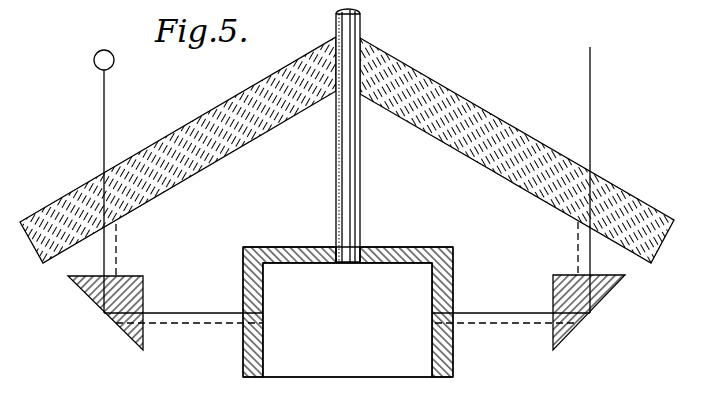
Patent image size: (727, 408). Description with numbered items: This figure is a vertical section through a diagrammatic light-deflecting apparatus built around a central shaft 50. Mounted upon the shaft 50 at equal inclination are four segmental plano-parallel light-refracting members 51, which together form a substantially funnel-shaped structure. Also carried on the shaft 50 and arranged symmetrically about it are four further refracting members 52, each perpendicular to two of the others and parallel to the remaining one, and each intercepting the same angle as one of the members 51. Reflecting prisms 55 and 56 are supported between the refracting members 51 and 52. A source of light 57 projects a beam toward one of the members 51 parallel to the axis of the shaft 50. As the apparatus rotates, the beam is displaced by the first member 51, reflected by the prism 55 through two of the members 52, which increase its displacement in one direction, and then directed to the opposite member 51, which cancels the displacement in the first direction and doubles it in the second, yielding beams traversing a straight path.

The shaft 50 is at (349, 30).
The segmental plano-parallel light-refracting member 51 is at (452, 104).
The refracting member 52 is at (243, 357).
The reflecting prism 55 is at (83, 291).
The reflecting prism 56 is at (607, 292).
The source of light 57 is at (97, 58).